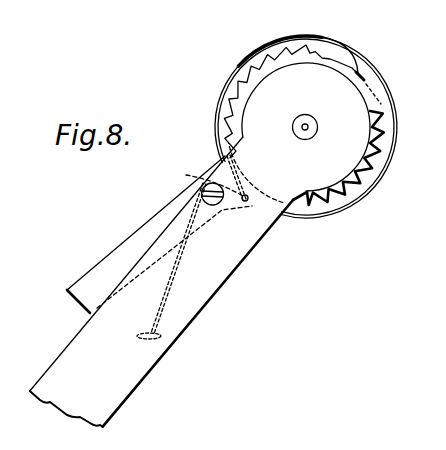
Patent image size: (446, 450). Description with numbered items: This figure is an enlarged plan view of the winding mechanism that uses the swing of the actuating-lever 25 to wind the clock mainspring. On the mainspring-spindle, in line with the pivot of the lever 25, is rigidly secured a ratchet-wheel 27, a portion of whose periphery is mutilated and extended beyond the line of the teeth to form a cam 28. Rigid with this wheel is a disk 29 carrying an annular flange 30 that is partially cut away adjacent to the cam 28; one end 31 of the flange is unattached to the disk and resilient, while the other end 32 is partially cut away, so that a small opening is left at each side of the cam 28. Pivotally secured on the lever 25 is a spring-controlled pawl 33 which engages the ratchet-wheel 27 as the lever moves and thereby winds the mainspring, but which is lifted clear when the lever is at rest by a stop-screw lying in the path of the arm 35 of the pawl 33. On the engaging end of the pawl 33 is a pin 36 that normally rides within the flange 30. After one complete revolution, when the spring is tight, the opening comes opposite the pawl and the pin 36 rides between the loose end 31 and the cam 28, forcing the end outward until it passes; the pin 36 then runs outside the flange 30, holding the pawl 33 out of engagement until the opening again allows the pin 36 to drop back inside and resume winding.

The actuating-lever 25 is at (161, 282).
The ratchet-wheel 27 is at (364, 173).
The cam 28 is at (333, 52).
The disk 29 is at (226, 95).
The annular flange 30 is at (243, 63).
The flange end 31 is at (304, 37).
The flange end 32 is at (375, 72).
The pawl 33 is at (196, 197).
The arm 35 is at (113, 264).
The pin 36 is at (246, 204).